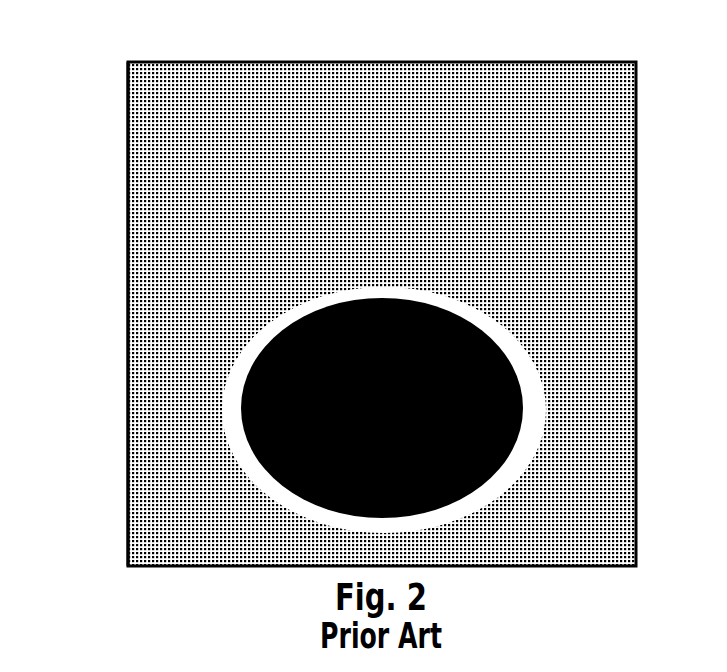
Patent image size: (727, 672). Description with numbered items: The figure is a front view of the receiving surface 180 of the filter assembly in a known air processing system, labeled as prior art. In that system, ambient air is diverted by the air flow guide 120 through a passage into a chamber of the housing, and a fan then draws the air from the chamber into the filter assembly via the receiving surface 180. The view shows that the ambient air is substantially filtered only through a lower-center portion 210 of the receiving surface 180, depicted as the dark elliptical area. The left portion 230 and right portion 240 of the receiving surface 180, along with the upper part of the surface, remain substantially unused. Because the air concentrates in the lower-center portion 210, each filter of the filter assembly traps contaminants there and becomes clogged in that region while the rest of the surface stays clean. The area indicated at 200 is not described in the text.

The air flow guide 120 is at (115, 50).
The receiving surface 180 is at (128, 306).
The top surface 200 is at (378, 141).
The lower-center portion 210 is at (380, 268).
The left portion 230 is at (192, 297).
The right portion 240 is at (577, 300).